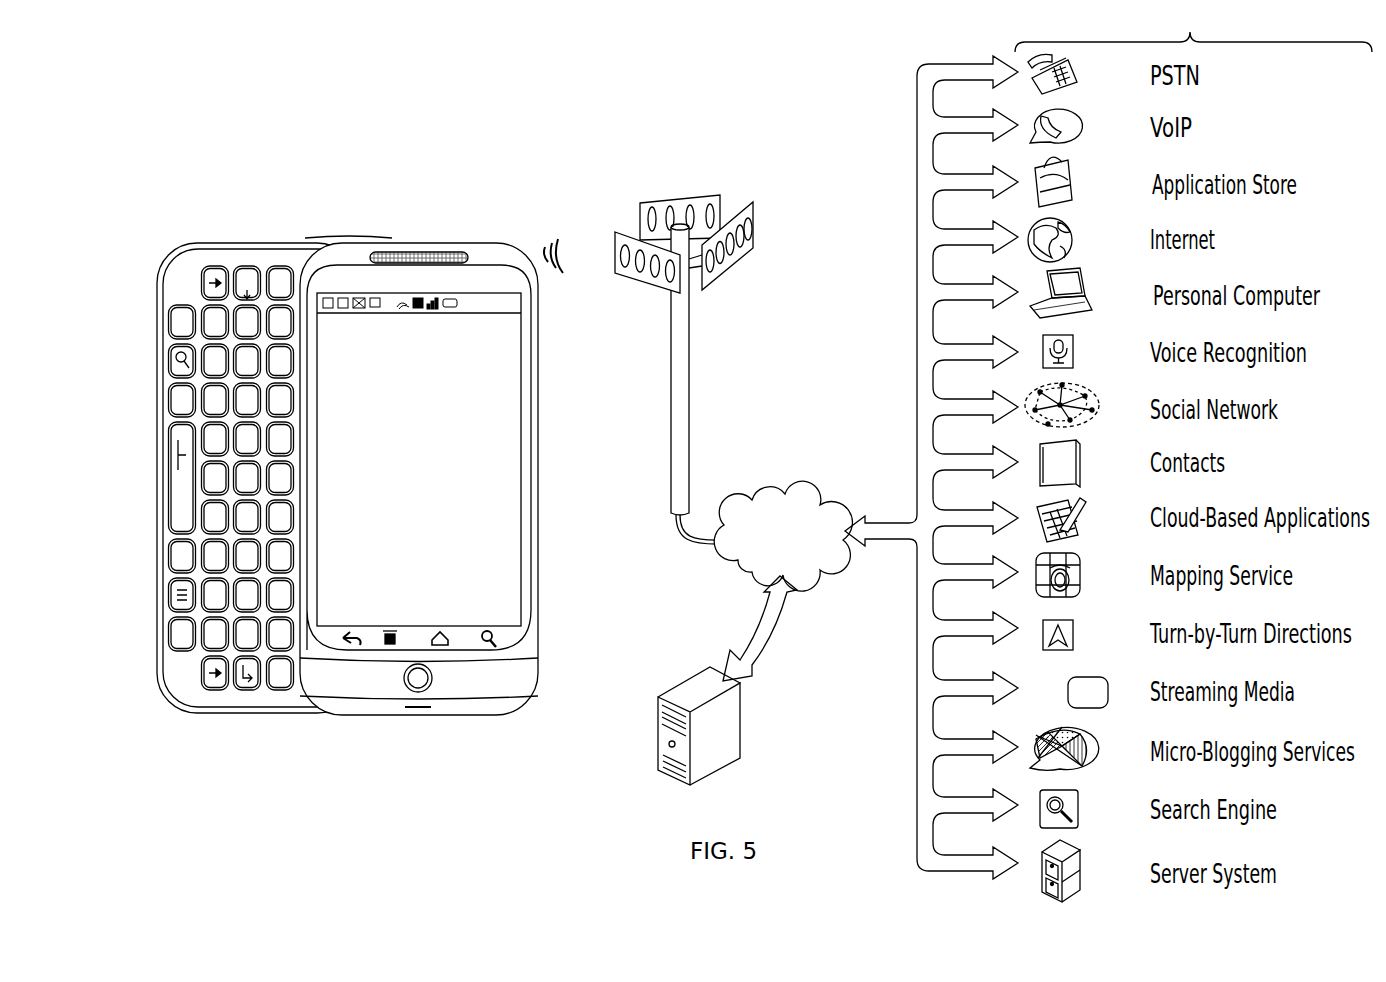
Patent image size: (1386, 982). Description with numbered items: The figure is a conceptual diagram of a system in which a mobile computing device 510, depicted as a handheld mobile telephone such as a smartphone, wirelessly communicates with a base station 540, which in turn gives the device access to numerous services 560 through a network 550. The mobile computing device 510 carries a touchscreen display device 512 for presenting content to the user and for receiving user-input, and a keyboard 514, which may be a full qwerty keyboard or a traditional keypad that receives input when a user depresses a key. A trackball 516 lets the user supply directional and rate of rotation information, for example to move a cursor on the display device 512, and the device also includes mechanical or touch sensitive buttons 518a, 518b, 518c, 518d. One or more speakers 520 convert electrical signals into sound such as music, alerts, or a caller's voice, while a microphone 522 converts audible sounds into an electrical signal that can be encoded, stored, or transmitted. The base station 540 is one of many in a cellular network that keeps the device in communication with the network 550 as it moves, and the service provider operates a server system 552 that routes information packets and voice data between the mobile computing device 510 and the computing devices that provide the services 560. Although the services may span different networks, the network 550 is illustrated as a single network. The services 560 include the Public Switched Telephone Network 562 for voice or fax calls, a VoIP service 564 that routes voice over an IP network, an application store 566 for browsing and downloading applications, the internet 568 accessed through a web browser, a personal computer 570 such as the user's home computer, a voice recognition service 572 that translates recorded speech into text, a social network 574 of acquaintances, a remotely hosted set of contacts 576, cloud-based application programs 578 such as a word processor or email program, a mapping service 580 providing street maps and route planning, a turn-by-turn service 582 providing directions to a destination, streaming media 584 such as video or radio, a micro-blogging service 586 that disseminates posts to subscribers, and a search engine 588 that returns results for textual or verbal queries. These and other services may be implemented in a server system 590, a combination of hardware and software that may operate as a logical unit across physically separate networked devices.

The mobile computing device 510 is at (472, 187).
The touchscreen display device 512 is at (447, 484).
The keyboard 514 is at (270, 243).
The trackball 516 is at (433, 684).
The button 518a is at (349, 627).
The button 518b is at (390, 626).
The button 518c is at (438, 627).
The button 518d is at (488, 626).
The speaker 520 is at (420, 253).
The microphone 522 is at (417, 710).
The base station 540 is at (733, 174).
The network 550 is at (790, 493).
The server system 552 is at (748, 726).
The services 560 is at (1108, 444).
The Public Switched Telephone Network (PSTN) 562 is at (1080, 78).
The Voice over Internet Protocol (VoIP) service 564 is at (1080, 132).
The application store 566 is at (1078, 188).
The internet 568 is at (1074, 240).
The personal computer 570 is at (1084, 284).
The voice recognition service 572 is at (1076, 344).
The social network 574 is at (1094, 392).
The contacts 576 is at (1082, 460).
The cloud-based application programs 578 is at (1082, 520).
The mapping service 580 is at (1084, 566).
The turn-by-turn service 582 is at (1076, 628).
The streaming media 584 is at (1108, 684).
The micro-blogging service 586 is at (1092, 748).
The search engine 588 is at (1078, 806).
The server system 590 is at (1082, 862).